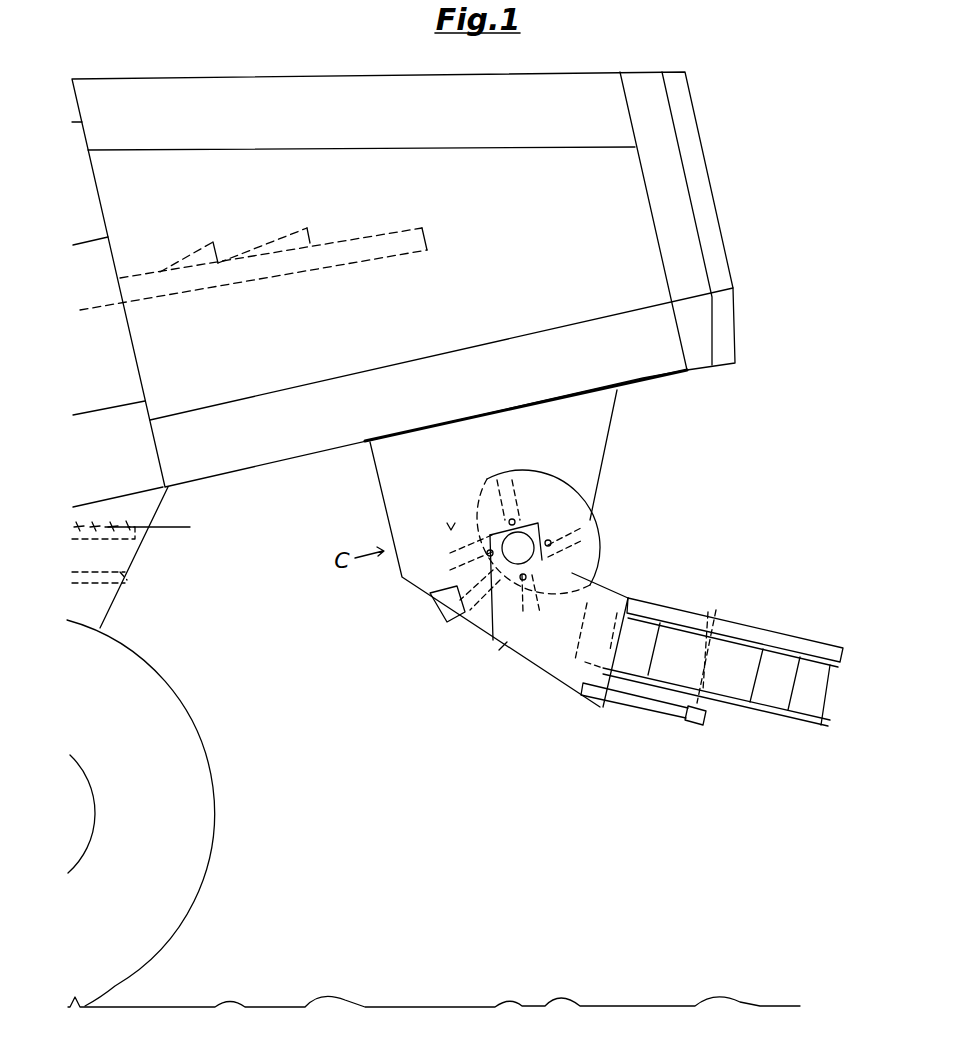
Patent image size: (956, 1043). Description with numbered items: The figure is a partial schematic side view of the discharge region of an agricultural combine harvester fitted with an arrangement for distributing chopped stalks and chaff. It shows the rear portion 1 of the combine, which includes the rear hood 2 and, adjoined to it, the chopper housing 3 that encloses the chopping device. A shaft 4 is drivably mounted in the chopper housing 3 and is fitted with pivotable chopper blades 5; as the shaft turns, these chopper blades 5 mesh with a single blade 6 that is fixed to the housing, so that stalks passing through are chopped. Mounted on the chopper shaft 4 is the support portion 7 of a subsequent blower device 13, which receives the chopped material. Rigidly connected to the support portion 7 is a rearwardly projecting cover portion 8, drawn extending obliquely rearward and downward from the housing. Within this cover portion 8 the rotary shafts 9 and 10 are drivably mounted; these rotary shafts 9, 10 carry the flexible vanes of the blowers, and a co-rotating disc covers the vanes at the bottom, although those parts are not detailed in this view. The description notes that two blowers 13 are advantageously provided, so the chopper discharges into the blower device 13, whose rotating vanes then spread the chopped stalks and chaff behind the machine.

The rear portion 1 is at (233, 72).
The rear hood 2 is at (548, 262).
The chopper housing 3 is at (408, 466).
The shaft 4 is at (527, 547).
The pivotable chopper blades 5 is at (598, 507).
The single blade 6 is at (430, 595).
The support portion 7 is at (513, 636).
The cover portion 8 is at (768, 637).
The rotary shaft 9 is at (722, 598).
The rotary shaft 10 is at (705, 651).
The blower device 13 is at (760, 720).